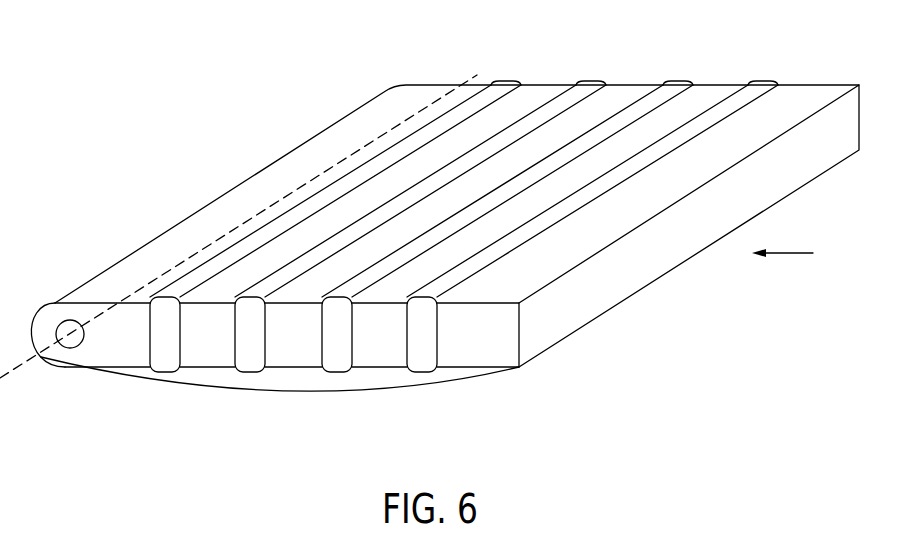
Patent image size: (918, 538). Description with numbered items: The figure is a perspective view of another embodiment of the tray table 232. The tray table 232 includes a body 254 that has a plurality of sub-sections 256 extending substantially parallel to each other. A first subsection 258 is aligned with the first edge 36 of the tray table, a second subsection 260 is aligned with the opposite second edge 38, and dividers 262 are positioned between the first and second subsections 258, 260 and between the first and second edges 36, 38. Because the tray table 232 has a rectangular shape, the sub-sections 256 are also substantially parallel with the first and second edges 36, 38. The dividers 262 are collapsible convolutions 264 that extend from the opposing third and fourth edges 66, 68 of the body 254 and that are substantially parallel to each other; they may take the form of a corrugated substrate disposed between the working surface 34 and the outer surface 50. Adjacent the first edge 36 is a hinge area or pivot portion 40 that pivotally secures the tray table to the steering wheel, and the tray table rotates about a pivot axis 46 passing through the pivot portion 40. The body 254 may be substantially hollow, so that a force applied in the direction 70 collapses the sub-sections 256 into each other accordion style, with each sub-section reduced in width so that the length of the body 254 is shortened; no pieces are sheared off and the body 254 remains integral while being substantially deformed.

The tray table 232 is at (184, 178).
The first edge 36 is at (35, 330).
The pivot portion 40 is at (71, 357).
The pivot axis 46 is at (12, 373).
The first subsection 258 is at (113, 357).
The third edge 66 is at (203, 360).
The divider 262 is at (248, 368).
The sub-sections 256 is at (285, 358).
The outer surface 50 is at (330, 393).
The second subsection 260 is at (490, 357).
The second edge 38 is at (580, 315).
The collapsible convolutions 264 is at (528, 233).
The direction 70 is at (788, 256).
The body 254 is at (537, 95).
The working surface 34 is at (618, 95).
The fourth edge 68 is at (702, 82).